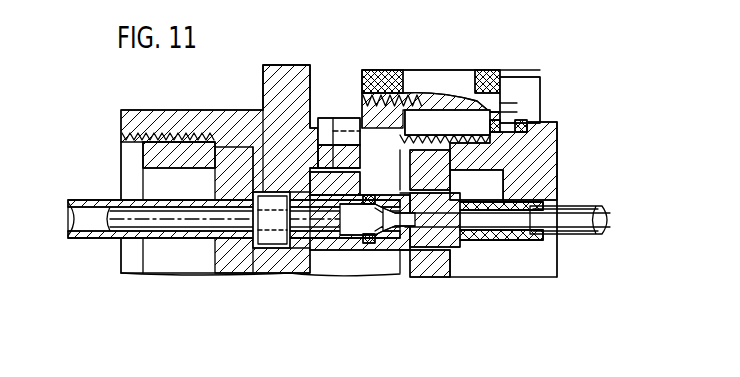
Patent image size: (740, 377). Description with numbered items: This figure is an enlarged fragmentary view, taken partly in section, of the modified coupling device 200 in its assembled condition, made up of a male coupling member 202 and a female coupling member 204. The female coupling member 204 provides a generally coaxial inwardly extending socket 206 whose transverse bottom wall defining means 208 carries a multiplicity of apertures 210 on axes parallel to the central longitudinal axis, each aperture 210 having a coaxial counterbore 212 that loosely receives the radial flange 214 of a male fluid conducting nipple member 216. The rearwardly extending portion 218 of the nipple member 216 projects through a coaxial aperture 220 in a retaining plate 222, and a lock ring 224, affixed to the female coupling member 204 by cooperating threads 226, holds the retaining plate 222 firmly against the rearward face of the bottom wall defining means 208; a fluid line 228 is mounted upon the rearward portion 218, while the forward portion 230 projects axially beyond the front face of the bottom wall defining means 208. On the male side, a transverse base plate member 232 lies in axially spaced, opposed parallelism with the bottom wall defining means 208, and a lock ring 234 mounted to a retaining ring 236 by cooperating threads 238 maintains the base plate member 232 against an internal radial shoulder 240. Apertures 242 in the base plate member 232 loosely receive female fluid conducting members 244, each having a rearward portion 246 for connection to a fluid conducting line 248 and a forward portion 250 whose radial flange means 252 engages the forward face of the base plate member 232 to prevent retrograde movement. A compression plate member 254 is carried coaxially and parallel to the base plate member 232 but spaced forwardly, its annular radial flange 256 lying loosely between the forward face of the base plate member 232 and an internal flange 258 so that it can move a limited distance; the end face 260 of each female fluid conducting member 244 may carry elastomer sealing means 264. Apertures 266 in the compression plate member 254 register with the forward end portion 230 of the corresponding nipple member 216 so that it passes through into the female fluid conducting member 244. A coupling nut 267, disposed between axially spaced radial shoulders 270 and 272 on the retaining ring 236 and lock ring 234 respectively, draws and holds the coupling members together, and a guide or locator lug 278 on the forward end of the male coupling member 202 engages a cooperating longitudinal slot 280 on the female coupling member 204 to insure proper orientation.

The coupling device 200 is at (450, 48).
The male coupling member 202 is at (500, 78).
The female coupling member 204 is at (197, 108).
The socket 206 is at (302, 112).
The transverse bottom wall defining means 208 is at (283, 275).
The aperture 210 is at (304, 252).
The counterbore 212 is at (265, 250).
The radial flange 214 is at (266, 180).
The male fluid conducting nipple member 216 is at (237, 222).
The rearwardly extending portion 218 is at (164, 238).
The coaxial aperture 220 is at (253, 148).
The retaining plate 222 is at (236, 165).
The lock ring 224 is at (150, 152).
The cooperating threads 226 is at (158, 130).
The fluid line 228 is at (86, 238).
The forward portion 230 is at (350, 268).
The transverse base plate member 232 is at (445, 262).
The lock ring 234 is at (545, 160).
The retaining ring 236 is at (472, 97).
The cooperating threads 238 is at (558, 170).
The internal radial shoulder 240 is at (445, 126).
The apertures 242 is at (457, 245).
The female fluid conducting member 244 is at (498, 242).
The rearward portion 246 is at (545, 242).
The fluid conducting line 248 is at (600, 211).
The forward portion 250 is at (422, 244).
The radial flange means 252 is at (477, 185).
The compression plate member 254 is at (346, 262).
The annular radial flange 256 is at (400, 98).
The internal flange 258 is at (338, 160).
The end face 260 is at (333, 205).
The elastomer sealing means 264 is at (398, 240).
The apertures 266 is at (327, 244).
The coupling nut 267 is at (541, 90).
The radial shoulder 270 is at (527, 113).
The radial shoulder 272 is at (529, 130).
The guide or locator lug 278 is at (319, 120).
The longitudinal slot 280 is at (378, 92).